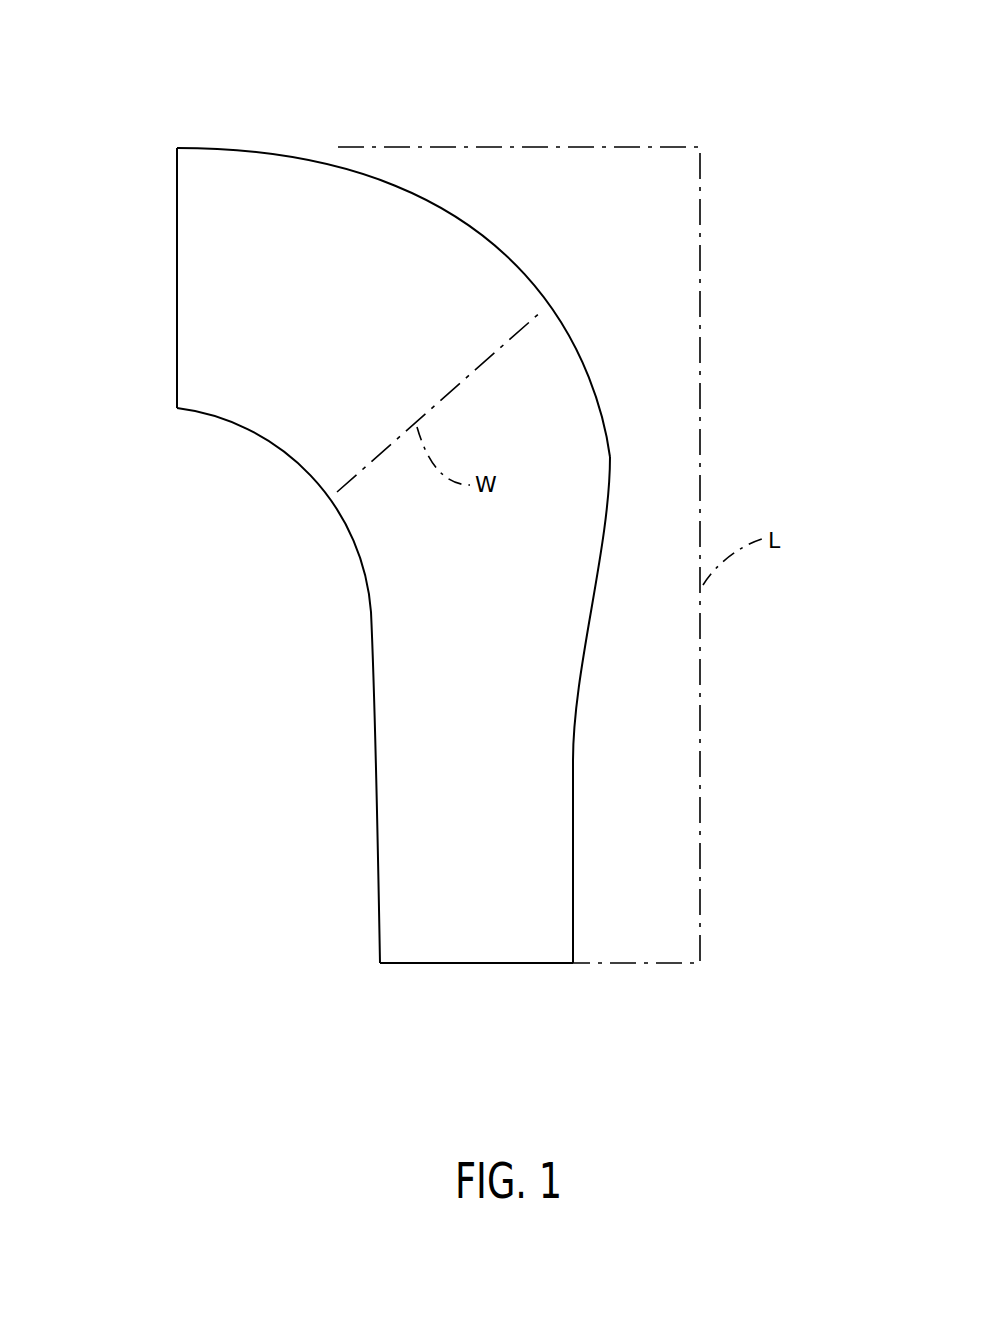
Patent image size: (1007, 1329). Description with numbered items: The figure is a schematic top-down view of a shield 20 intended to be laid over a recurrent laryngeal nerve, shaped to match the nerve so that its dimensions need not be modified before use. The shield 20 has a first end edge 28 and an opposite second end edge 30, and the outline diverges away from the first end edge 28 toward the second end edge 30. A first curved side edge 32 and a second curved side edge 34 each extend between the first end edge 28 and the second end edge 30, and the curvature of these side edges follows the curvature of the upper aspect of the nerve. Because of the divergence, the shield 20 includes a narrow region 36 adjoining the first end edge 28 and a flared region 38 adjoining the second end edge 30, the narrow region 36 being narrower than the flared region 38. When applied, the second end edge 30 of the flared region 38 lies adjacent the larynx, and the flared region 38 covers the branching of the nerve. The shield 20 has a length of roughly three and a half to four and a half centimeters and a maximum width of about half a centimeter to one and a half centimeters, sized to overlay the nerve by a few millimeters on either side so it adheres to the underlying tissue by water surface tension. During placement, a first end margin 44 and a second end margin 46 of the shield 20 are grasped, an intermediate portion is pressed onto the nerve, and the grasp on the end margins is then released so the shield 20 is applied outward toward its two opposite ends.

The shield 20 is at (387, 539).
The first end edge 28 is at (445, 963).
The second end edge 30 is at (177, 265).
The first curved side edge 32 is at (485, 232).
The second curved side edge 34 is at (350, 537).
The narrow region 36 is at (470, 847).
The flared region 38 is at (450, 350).
The first end margin 44 is at (518, 910).
The second end margin 46 is at (242, 343).